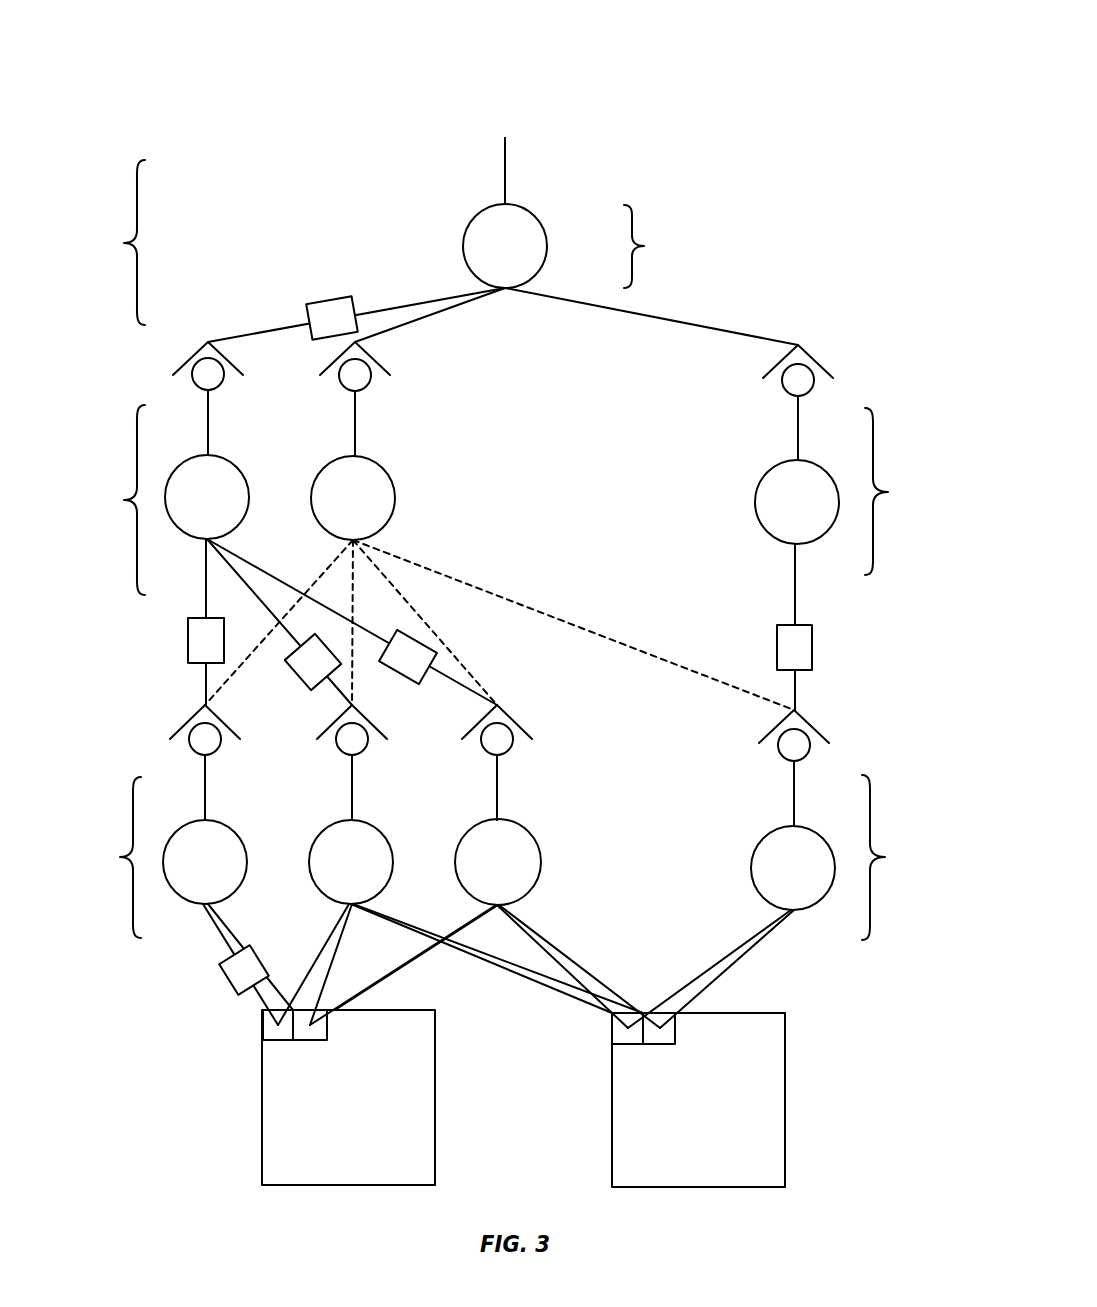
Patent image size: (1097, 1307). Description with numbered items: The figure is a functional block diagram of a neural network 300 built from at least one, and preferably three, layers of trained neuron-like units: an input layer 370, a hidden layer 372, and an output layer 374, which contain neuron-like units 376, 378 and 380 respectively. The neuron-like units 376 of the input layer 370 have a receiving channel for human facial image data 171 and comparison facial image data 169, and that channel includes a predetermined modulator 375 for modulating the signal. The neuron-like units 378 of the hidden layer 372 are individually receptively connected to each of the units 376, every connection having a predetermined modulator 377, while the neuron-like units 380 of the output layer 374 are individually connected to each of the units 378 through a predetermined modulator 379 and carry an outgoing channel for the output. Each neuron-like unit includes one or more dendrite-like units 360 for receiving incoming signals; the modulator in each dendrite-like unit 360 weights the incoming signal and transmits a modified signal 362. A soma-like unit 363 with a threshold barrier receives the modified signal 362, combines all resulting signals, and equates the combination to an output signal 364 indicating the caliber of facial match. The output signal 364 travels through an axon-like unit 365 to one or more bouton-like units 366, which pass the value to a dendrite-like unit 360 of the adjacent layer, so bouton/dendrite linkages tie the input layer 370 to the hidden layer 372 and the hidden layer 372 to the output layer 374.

The neural network 300 is at (693, 66).
The comparison facial image data 169 is at (786, 1099).
The human facial image data 171 is at (436, 1097).
The dendrite-like unit 360 is at (237, 368).
The modified signal 362 is at (507, 290).
The soma-like unit 363 is at (547, 242).
The output signal 364 is at (505, 202).
The axon-like unit 365 is at (505, 150).
The bouton-like unit 366 is at (219, 385).
The input layer 370 is at (899, 857).
The hidden layer 372 is at (903, 491).
The output layer 374 is at (655, 246).
The predetermined modulator 375 is at (228, 986).
The neuron-like unit of the input layer 376 is at (109, 857).
The predetermined modulator 377 is at (188, 640).
The neuron-like unit of the hidden layer 378 is at (112, 500).
The predetermined modulator 379 is at (330, 302).
The neuron-like unit of the output layer 380 is at (112, 242).